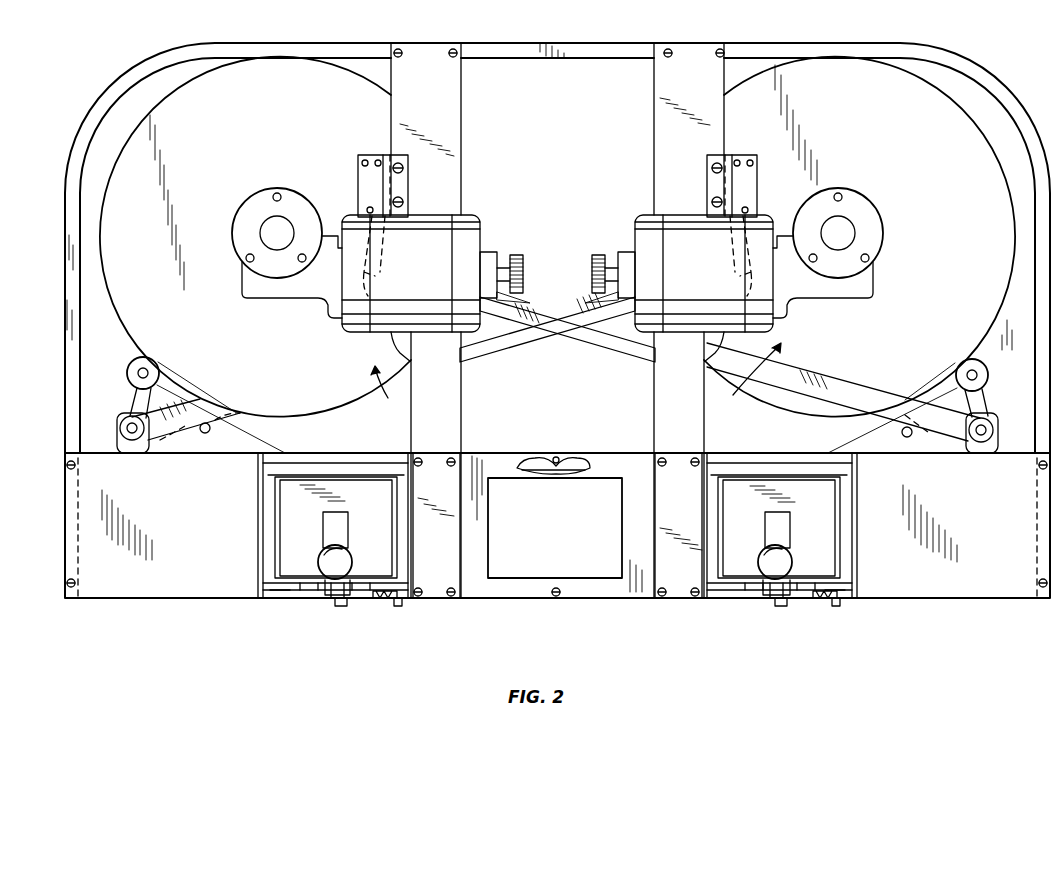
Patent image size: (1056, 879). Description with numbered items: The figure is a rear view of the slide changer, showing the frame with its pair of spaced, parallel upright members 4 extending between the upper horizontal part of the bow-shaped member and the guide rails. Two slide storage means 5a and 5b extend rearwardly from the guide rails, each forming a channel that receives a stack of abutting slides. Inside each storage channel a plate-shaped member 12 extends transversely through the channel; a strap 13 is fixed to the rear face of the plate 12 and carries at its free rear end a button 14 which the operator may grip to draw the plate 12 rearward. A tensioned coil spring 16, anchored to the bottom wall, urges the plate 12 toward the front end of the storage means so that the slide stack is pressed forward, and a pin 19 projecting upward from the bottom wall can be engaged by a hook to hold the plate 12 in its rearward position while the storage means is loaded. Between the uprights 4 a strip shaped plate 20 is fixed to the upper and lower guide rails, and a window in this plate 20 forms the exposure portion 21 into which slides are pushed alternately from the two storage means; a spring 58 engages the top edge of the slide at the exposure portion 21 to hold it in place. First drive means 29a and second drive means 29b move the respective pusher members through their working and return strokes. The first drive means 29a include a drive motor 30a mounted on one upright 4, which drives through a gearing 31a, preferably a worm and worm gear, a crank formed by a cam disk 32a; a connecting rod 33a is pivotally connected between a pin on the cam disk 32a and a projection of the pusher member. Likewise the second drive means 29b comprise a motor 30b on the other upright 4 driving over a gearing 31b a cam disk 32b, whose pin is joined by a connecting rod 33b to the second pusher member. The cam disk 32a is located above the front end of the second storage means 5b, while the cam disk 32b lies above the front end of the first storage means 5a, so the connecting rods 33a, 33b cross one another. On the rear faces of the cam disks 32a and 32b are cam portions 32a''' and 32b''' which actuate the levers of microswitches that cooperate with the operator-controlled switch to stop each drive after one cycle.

The upright members 4 is at (452, 421).
The first slide storage means 5a is at (860, 582).
The second slide storage means 5b is at (250, 583).
The plate-shaped member 12 is at (384, 501).
The strap 13 is at (335, 523).
The button 14 is at (338, 562).
The coil spring 16 is at (380, 600).
The pin 19 is at (330, 600).
The strip shaped plate 20 is at (487, 527).
The exposure portion 21 is at (598, 490).
The first drive means 29a is at (380, 395).
The second drive means 29b is at (748, 382).
The drive motor 30a is at (430, 245).
The motor 30b is at (685, 245).
The gearing 31a is at (262, 200).
The gearing 31b is at (862, 213).
The cam disk 32a is at (188, 384).
The cam disk 32b is at (864, 376).
The cam portion 32a''' is at (349, 186).
The cam portion 32b''' is at (772, 186).
The connecting rod 33a is at (612, 333).
The connecting rod 33b is at (488, 337).
The spring 58 is at (532, 463).